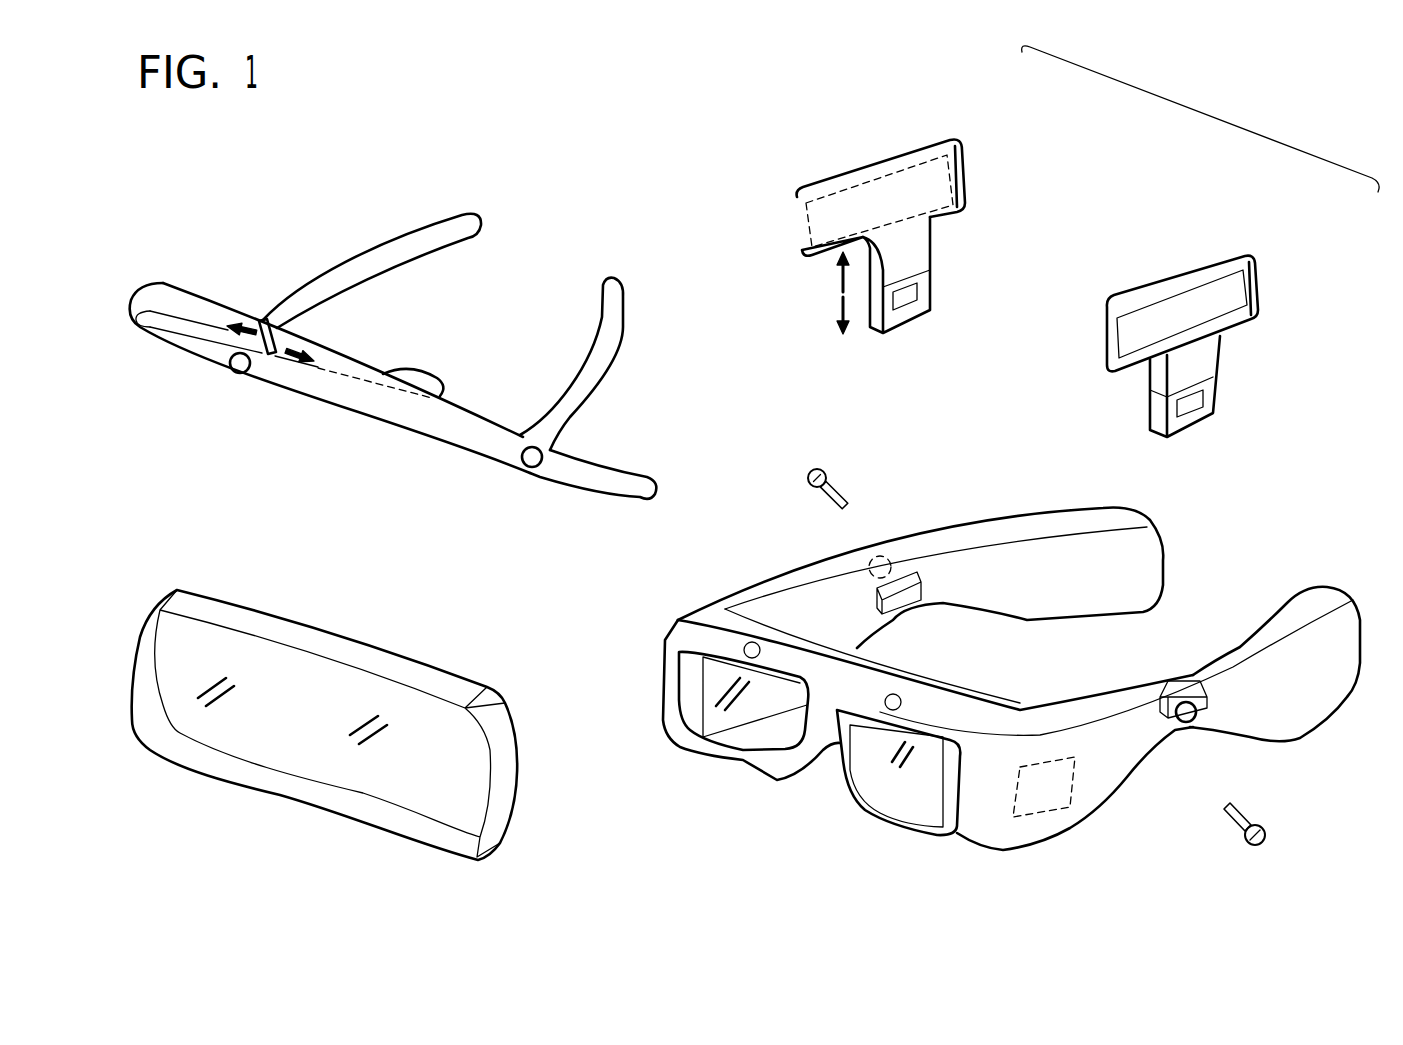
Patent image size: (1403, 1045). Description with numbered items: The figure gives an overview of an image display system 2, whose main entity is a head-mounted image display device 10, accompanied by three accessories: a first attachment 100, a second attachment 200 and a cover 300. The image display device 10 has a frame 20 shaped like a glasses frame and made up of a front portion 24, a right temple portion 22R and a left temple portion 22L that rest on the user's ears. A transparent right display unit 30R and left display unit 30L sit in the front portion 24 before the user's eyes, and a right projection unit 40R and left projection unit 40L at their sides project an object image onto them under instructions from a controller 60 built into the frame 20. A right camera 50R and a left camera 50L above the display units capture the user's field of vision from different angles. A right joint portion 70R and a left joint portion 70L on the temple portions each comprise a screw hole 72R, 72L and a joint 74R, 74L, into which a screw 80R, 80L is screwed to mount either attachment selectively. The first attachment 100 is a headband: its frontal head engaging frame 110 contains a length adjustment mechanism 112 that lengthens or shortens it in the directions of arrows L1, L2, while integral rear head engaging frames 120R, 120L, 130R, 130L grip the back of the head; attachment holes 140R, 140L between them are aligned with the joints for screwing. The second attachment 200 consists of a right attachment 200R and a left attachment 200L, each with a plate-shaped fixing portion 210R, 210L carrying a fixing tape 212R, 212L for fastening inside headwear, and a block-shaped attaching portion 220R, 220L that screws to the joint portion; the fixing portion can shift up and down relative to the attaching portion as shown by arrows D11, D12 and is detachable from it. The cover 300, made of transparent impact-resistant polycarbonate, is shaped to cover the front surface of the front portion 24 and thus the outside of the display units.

The image display system 2 is at (185, 183).
The image display device 10 is at (677, 600).
The frame 20 is at (733, 590).
The right temple portion 22R is at (1107, 510).
The left temple portion 22L is at (1310, 587).
The front portion 24 is at (973, 850).
The right display unit 30R is at (767, 737).
The left display unit 30L is at (883, 790).
The right projection unit 40R is at (687, 720).
The left projection unit 40L is at (947, 820).
The right camera 50R is at (742, 648).
The left camera 50L is at (903, 700).
The controller 60 is at (1040, 813).
The right joint portion 70R is at (900, 533).
The left joint portion 70L is at (1195, 653).
The screw hole 72R is at (867, 560).
The screw hole 72L is at (1190, 723).
The joint 74R is at (910, 570).
The joint 74L is at (1167, 687).
The screw 80R is at (835, 470).
The screw 80L is at (1247, 807).
The first attachment 100 is at (343, 230).
The frontal head engaging frame 110 is at (163, 283).
The length adjustment mechanism 112 is at (270, 325).
The rear head engaging frame 120R is at (467, 213).
The rear head engaging frame 120L is at (610, 280).
The rear head engaging frame 130R is at (647, 480).
The rear head engaging frame 130L is at (420, 370).
The attachment hole 140R is at (233, 383).
The attachment hole 140L is at (533, 470).
The arrow L1 is at (250, 322).
The arrow L2 is at (297, 340).
The second attachment 200 is at (1203, 112).
The right attachment 200R is at (960, 127).
The left attachment 200L is at (1257, 240).
The fixing portion 210R is at (873, 157).
The fixing portion 210L is at (1207, 270).
The fixing tape 212R is at (967, 180).
The fixing tape 212L is at (1257, 287).
The attaching portion 220R is at (933, 290).
The attaching portion 220L is at (1217, 390).
The arrow D11 is at (833, 280).
The arrow D12 is at (833, 313).
The cover 300 is at (167, 570).